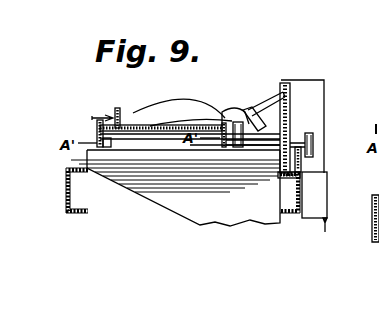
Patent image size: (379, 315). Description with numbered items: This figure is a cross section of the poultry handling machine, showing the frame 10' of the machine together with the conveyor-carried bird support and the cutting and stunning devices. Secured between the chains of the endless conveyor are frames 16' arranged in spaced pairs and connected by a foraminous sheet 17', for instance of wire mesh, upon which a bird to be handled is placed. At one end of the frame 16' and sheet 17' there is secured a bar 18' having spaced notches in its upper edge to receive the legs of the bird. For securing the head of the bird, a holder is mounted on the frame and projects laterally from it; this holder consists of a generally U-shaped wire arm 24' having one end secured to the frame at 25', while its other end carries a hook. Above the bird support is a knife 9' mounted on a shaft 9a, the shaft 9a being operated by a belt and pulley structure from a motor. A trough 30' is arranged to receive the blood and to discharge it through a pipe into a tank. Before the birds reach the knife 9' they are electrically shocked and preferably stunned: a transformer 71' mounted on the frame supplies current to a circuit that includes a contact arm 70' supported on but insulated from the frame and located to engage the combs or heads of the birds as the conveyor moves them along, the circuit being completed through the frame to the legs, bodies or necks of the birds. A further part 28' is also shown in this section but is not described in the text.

The trough 30' is at (175, 188).
The frame 10' is at (198, 190).
The foraminous sheet 17' is at (190, 139).
The frame 16' is at (130, 112).
The bar 18' is at (87, 122).
The securing point of wire arm 25' is at (182, 107).
The wire arm 24' is at (244, 116).
The contact arm 70' is at (268, 91).
The knife 9' is at (253, 129).
The column 28' is at (301, 129).
The shaft 9a is at (313, 146).
The transformer 71' is at (328, 202).